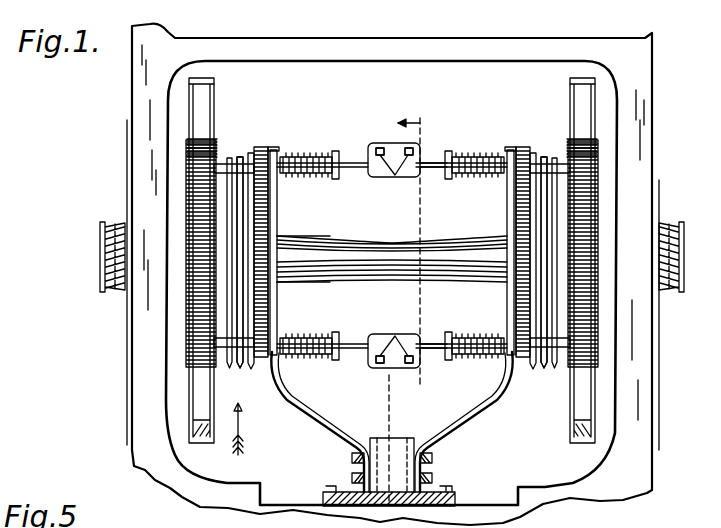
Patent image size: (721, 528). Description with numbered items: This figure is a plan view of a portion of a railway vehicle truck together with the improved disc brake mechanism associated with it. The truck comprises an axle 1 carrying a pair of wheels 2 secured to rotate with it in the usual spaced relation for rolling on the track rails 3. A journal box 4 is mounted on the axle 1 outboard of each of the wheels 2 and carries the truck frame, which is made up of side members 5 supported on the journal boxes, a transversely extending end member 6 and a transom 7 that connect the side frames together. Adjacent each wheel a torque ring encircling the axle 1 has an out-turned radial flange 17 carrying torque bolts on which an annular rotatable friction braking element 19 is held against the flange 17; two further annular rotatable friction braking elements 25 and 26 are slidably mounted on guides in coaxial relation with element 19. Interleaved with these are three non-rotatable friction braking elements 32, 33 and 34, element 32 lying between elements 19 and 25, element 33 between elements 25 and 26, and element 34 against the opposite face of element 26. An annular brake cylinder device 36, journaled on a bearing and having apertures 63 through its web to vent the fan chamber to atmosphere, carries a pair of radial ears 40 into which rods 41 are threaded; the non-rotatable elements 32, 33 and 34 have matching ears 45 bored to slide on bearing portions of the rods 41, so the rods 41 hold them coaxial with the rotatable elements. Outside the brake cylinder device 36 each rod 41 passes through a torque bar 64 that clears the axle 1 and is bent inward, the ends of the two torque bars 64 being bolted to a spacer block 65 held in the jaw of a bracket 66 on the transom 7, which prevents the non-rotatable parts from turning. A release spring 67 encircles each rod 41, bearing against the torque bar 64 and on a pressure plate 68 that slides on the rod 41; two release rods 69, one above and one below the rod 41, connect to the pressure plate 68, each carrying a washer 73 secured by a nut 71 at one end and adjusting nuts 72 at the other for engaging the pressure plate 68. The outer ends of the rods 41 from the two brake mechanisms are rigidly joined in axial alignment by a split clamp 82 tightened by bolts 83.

The axle 1 is at (466, 247).
The wheels 2 is at (180, 351).
The track rails 3 is at (185, 397).
The journal box 4 is at (125, 305).
The side members 5 is at (133, 176).
The end member 6 is at (383, 50).
The transom 7 is at (414, 308).
The radial flange 17 is at (225, 198).
The rotatable friction braking element 19 is at (230, 157).
The rotatable friction braking element 25 is at (240, 157).
The rotatable friction braking element 26 is at (262, 150).
The non-rotatable friction braking element 32 is at (240, 222).
The non-rotatable friction braking element 33 is at (240, 235).
The non-rotatable friction braking element 34 is at (250, 250).
The brake cylinder device 36 is at (270, 237).
The radial extending ears 40 is at (270, 147).
The rod 41 is at (356, 165).
The radial extending ears 45 is at (528, 167).
The apertures 63 is at (278, 157).
The torque bar 64 is at (340, 432).
The spacer block 65 is at (398, 435).
The bracket 66 is at (437, 490).
The release spring 67 is at (320, 157).
The pressure plate 68 is at (336, 180).
The release rods 69 is at (300, 177).
The nut 71 is at (226, 170).
The adjusting nuts 72 is at (378, 178).
The washer 73 is at (342, 356).
The split clamp 82 is at (418, 177).
The bolts 83 is at (396, 177).